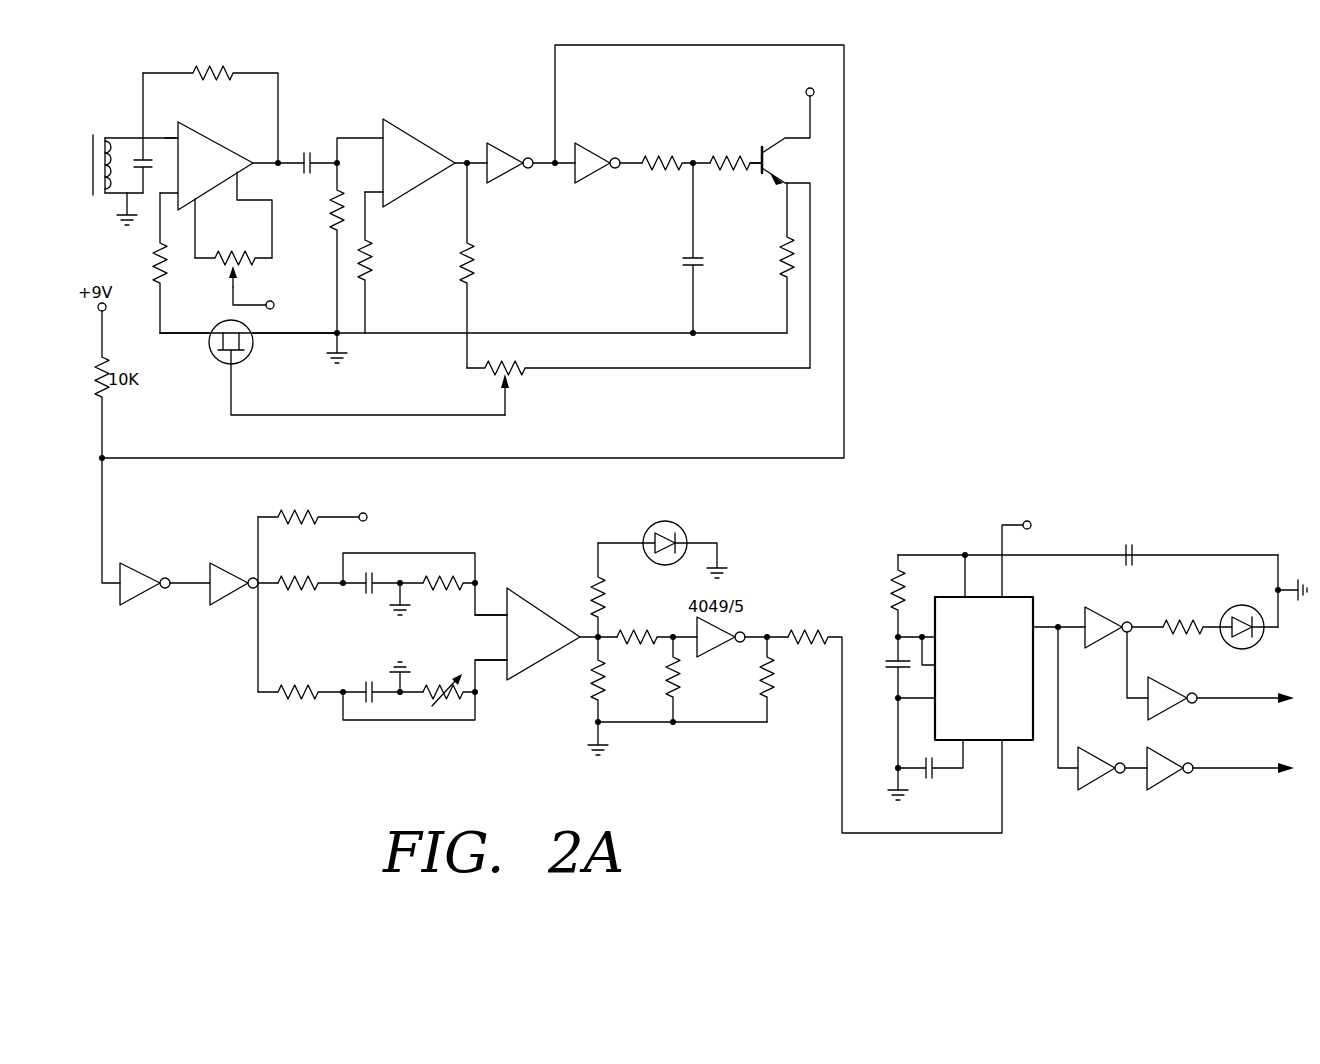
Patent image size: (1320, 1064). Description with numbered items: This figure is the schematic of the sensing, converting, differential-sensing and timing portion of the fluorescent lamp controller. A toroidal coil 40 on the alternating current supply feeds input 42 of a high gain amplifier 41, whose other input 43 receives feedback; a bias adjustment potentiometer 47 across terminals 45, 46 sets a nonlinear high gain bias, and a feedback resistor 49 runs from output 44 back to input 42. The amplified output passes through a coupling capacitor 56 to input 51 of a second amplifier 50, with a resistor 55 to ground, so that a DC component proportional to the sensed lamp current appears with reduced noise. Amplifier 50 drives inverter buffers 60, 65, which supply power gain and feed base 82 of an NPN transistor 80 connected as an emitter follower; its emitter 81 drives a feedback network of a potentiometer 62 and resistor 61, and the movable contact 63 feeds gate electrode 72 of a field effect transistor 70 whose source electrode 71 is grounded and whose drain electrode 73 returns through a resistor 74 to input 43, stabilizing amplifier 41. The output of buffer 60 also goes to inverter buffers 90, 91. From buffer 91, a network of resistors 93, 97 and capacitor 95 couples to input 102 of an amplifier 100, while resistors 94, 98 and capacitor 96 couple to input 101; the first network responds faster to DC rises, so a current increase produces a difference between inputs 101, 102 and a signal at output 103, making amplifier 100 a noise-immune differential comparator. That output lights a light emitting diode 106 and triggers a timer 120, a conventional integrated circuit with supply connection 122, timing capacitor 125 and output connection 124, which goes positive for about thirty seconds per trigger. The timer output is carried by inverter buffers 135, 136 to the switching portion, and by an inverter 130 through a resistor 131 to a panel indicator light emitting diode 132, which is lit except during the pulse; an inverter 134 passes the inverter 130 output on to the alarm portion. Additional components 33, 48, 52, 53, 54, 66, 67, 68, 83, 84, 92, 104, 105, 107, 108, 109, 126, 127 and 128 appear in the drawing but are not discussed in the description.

The capacitor 33 is at (135, 133).
The toroidal coil 40 is at (100, 148).
The high gain amplifier 41 is at (215, 140).
The input 42 is at (188, 132).
The input 43 is at (177, 188).
The output 44 is at (255, 160).
The terminal 45 is at (240, 188).
The terminal 46 is at (198, 203).
The bias adjustment potentiometer 47 is at (262, 256).
The potentiometer wiper 48 is at (240, 300).
The feedback resistor 49 is at (233, 65).
The second amplifier 50 is at (408, 133).
The input 51 is at (388, 130).
The inverting input 52 is at (383, 185).
The output 53 is at (458, 152).
The resistor 54 is at (375, 252).
The resistor 55 is at (330, 222).
The coupling capacitor 56 is at (308, 178).
The inverter buffer 60 is at (497, 150).
The resistor 61 is at (458, 278).
The potentiometer 62 is at (523, 362).
The movable contact 63 is at (508, 408).
The inverter buffer 65 is at (585, 150).
The resistor 66 is at (660, 156).
The capacitor 67 is at (703, 253).
The resistor 68 is at (720, 156).
The field effect transistor 70 is at (220, 362).
The source electrode 71 is at (268, 338).
The gate electrode 72 is at (250, 418).
The drain electrode 73 is at (183, 337).
The resistor 74 is at (155, 290).
The NPN transistor 80 is at (810, 150).
The emitter 81 is at (778, 186).
The base 82 is at (758, 155).
The emitter 83 is at (812, 110).
The resistor 84 is at (780, 280).
The inverter buffer 90 is at (128, 570).
The inverter buffer 91 is at (218, 568).
The resistor 92 is at (295, 505).
The resistor 93 is at (300, 578).
The resistor 94 is at (293, 684).
The capacitor 95 is at (370, 595).
The capacitor 96 is at (370, 680).
The resistor 97 is at (450, 572).
The resistor 98 is at (445, 710).
The amplifier 100 is at (548, 603).
The input 101 is at (510, 655).
The input 102 is at (512, 600).
The output 103 is at (583, 625).
The resistor 104 is at (592, 705).
The resistor 105 is at (606, 600).
The light emitting diode 106 is at (652, 526).
The resistor 107 is at (685, 690).
The resistor 108 is at (776, 685).
The resistor 109 is at (800, 630).
The timer 120 is at (1020, 741).
The supply connection 122 is at (1000, 585).
The output connection 124 is at (1060, 610).
The timing capacitor 125 is at (890, 665).
The resistor 126 is at (888, 575).
The capacitor 127 is at (1135, 545).
The capacitor 128 is at (930, 785).
The inverter 130 is at (1098, 642).
The resistor 131 is at (1185, 615).
The panel indicator light emitting diode 132 is at (1258, 642).
The inverter 134 is at (1165, 714).
The inverter buffer 135 is at (1093, 784).
The inverter buffer 136 is at (1161, 784).